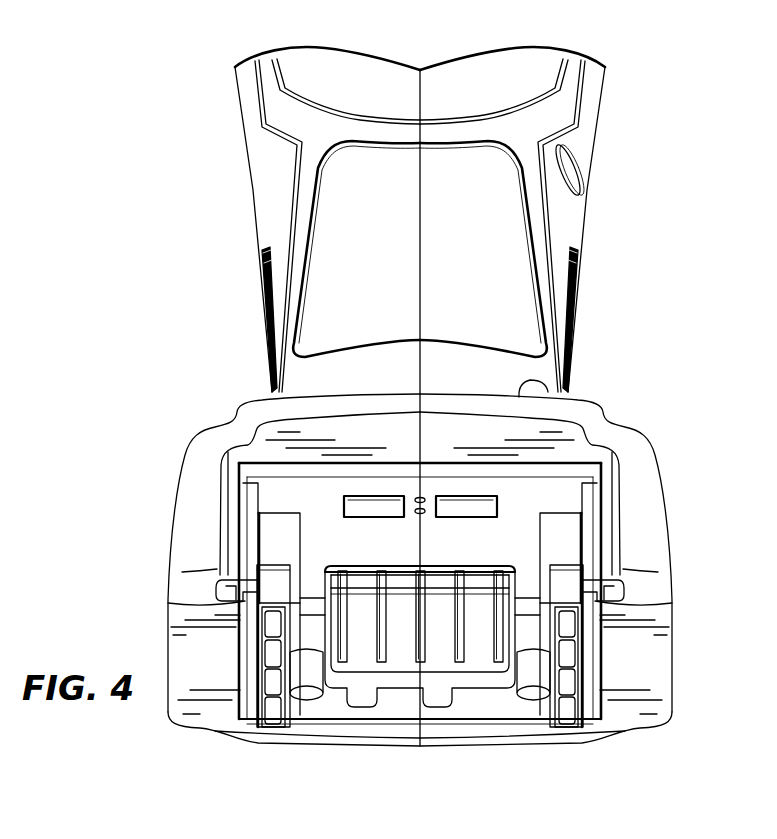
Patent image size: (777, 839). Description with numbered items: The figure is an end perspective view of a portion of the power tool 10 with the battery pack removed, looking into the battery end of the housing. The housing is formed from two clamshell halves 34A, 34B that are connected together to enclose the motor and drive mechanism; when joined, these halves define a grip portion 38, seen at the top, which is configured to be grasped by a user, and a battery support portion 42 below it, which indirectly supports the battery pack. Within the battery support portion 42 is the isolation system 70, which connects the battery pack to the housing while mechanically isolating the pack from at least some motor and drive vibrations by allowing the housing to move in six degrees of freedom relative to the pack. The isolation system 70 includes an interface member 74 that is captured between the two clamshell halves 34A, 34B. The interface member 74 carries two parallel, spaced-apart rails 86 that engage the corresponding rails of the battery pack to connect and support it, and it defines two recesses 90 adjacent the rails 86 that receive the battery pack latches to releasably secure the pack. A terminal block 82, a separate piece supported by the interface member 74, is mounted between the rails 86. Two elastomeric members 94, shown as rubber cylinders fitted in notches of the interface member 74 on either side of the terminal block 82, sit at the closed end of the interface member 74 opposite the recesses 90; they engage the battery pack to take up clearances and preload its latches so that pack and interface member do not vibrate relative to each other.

The power tool 10 is at (698, 186).
The grip portion 38 is at (389, 90).
The clamshell half 34A is at (265, 221).
The clamshell half 34B is at (572, 226).
The battery support portion 42 is at (622, 433).
The interface member 74 is at (322, 498).
The rails 86 is at (281, 577).
The recesses 90 is at (238, 603).
The terminal block 82 is at (420, 633).
The elastomeric members 94 is at (307, 702).
The isolation system 70 is at (366, 752).